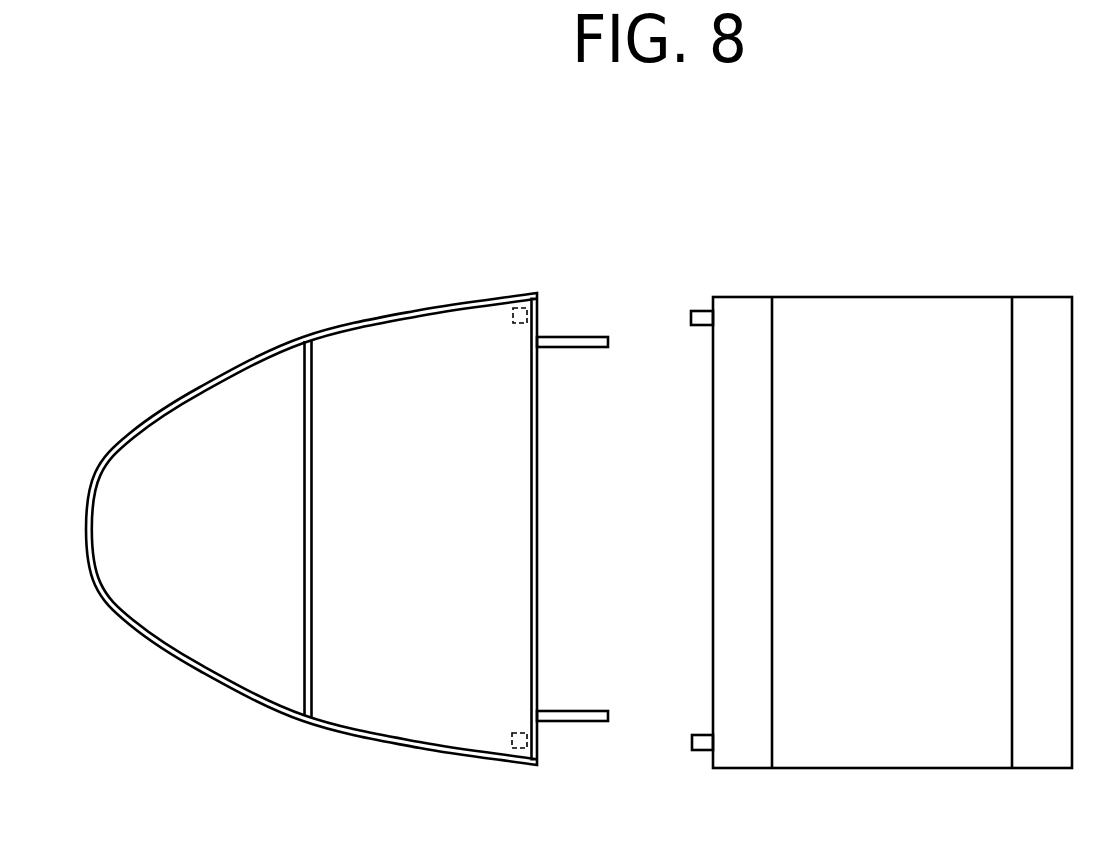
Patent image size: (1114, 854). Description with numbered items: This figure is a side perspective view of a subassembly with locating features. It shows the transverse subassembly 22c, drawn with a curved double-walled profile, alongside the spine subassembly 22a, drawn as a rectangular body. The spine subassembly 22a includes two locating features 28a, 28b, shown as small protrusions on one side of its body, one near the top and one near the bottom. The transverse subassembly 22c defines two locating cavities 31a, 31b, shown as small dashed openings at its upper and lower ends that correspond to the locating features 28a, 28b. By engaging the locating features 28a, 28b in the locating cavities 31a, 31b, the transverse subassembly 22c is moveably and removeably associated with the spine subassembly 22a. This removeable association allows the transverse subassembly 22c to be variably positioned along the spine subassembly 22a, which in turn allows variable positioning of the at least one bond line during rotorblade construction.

The spine subassembly 22a is at (755, 310).
The transverse subassembly 22c is at (225, 690).
The locating feature 28a is at (691, 743).
The locating feature 28b is at (694, 310).
The locating cavity 31a is at (538, 319).
The locating cavity 31b is at (538, 740).